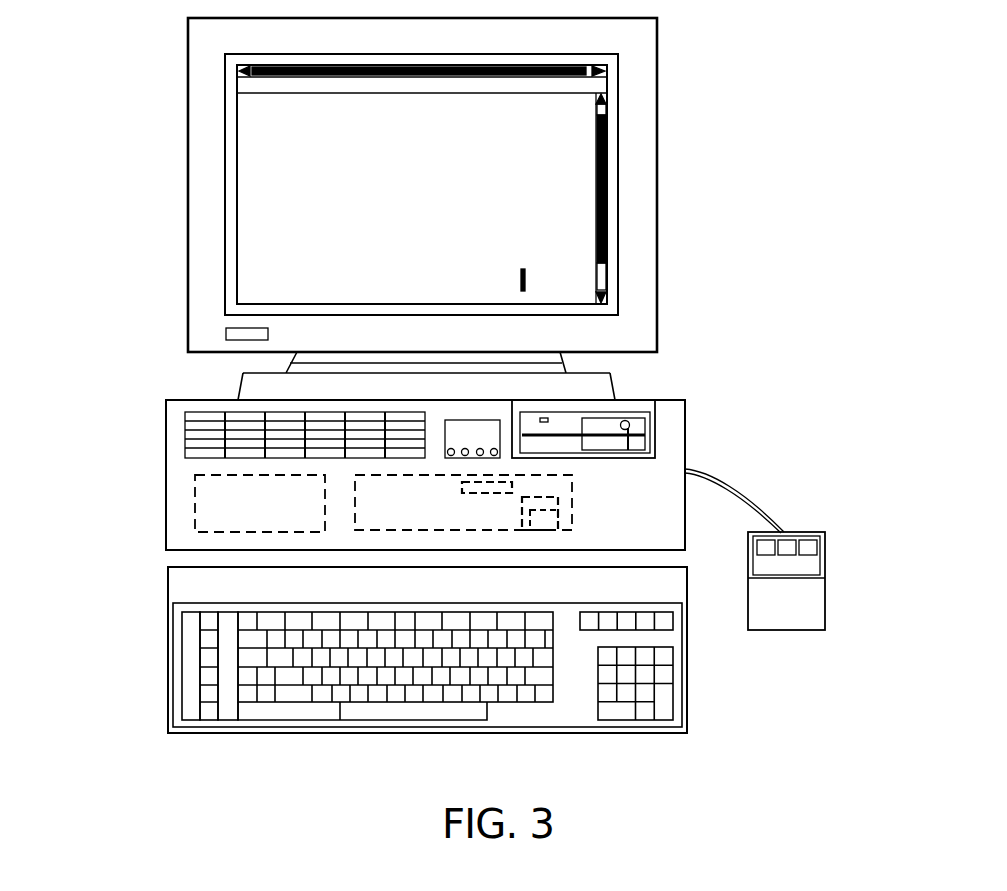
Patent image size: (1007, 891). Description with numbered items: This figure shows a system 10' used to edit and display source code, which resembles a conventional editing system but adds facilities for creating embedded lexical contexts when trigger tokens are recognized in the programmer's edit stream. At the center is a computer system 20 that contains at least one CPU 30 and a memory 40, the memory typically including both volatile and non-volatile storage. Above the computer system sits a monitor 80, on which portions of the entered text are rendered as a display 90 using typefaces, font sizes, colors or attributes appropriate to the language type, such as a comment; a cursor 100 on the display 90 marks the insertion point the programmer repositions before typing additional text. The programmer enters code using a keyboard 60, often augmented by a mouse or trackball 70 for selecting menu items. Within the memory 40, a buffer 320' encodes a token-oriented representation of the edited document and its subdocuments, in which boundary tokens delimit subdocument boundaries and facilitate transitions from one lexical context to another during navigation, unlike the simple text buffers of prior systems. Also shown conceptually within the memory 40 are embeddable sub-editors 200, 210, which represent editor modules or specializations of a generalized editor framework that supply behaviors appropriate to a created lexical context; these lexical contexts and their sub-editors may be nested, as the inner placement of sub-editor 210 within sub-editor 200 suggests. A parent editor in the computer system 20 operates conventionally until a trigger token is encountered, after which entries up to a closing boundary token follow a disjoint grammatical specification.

The system 10' is at (531, 209).
The computer system 20 is at (124, 457).
The CPU 30 is at (215, 502).
The memory 40 is at (565, 490).
The keyboard 60 is at (129, 699).
The mouse or trackball 70 is at (866, 580).
The monitor 80 is at (126, 177).
The display 90 is at (306, 153).
The cursor 100 is at (530, 283).
The sub-editor 200 is at (560, 506).
The sub-editor 210 is at (543, 520).
The buffer 320' is at (448, 469).